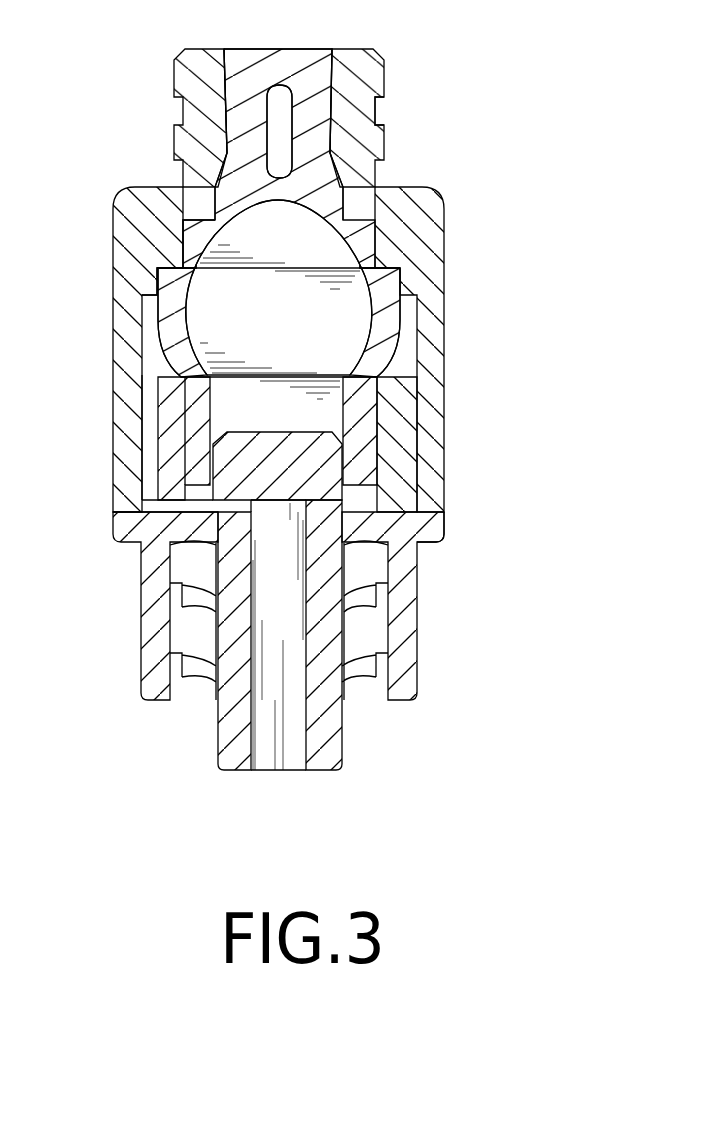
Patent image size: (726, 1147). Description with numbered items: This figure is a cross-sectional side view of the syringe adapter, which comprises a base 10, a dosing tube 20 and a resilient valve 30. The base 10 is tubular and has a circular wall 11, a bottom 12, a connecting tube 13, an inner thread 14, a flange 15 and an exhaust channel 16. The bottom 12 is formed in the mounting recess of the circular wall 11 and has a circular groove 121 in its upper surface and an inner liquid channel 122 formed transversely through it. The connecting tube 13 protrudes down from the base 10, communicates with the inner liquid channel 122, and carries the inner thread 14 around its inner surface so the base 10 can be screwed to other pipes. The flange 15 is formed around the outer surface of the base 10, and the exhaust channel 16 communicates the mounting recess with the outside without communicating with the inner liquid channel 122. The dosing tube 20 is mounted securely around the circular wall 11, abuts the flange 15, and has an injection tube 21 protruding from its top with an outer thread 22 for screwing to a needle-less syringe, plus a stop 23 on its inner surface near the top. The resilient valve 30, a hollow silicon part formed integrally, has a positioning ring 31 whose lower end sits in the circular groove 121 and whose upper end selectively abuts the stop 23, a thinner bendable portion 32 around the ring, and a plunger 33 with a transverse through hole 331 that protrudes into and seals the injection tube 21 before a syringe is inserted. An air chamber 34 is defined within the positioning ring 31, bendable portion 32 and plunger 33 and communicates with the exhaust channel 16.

The base 10 is at (407, 633).
The circular wall 11 is at (405, 431).
The bottom 12 is at (360, 492).
The circular groove 121 is at (152, 412).
The inner liquid channel 122 is at (198, 512).
The connecting tube 13 is at (230, 723).
The inner thread 14 is at (357, 660).
The flange 15 is at (432, 527).
The exhaust channel 16 is at (343, 538).
The dosing tube 20 is at (430, 325).
The injection tube 21 is at (355, 123).
The outer thread 22 is at (386, 147).
The stop 23 is at (180, 268).
The resilient valve 30 is at (277, 201).
The positioning ring 31 is at (165, 327).
The bendable portion 32 is at (212, 248).
The plunger 33 is at (243, 108).
The through hole 331 is at (275, 93).
The air chamber 34 is at (355, 304).